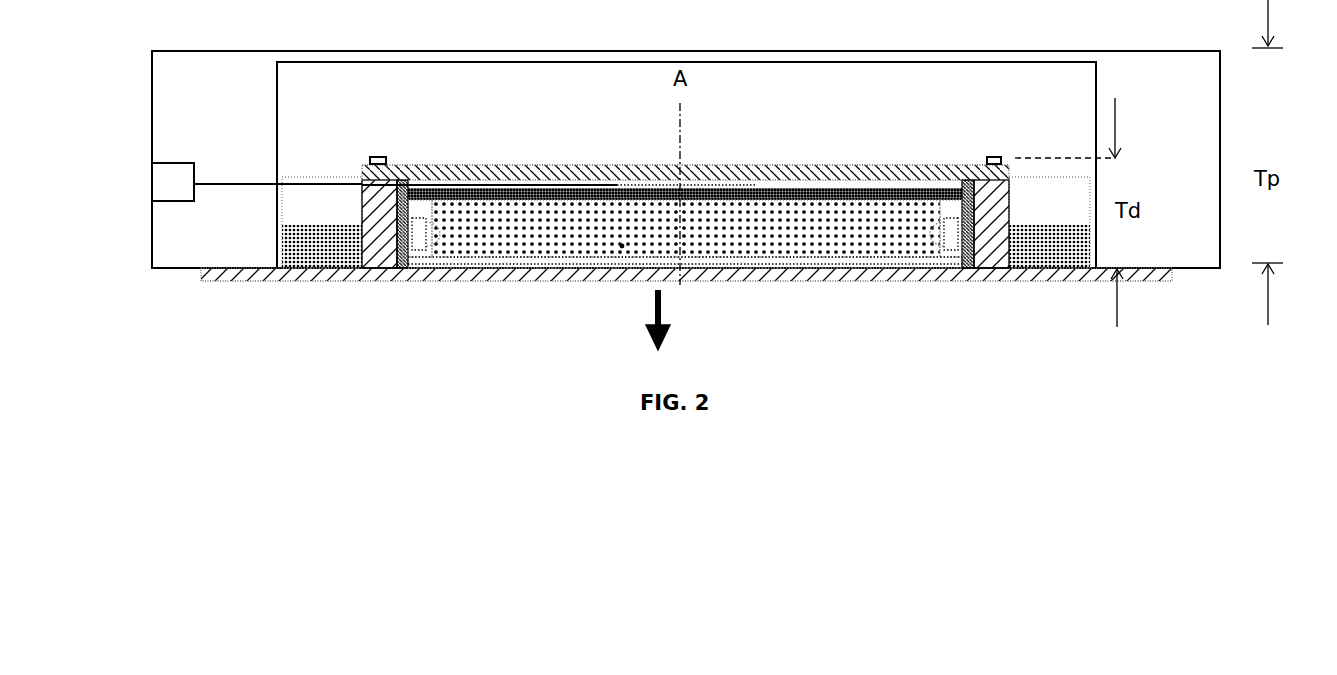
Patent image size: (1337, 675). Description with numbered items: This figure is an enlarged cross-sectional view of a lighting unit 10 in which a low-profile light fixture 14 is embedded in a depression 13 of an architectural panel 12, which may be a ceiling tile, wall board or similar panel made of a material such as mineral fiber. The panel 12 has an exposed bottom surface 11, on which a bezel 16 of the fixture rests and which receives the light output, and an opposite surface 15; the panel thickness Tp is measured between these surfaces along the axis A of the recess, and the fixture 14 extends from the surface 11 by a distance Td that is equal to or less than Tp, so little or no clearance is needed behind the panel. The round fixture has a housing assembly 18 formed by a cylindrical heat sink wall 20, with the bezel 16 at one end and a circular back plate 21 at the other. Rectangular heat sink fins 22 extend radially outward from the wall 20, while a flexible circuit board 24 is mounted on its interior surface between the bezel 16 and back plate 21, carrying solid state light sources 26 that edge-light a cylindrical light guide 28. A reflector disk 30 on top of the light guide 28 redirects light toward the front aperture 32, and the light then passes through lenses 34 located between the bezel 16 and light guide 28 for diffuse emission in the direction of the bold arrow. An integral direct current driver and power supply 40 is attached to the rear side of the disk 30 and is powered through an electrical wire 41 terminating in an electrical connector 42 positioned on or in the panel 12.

The lighting unit 10 is at (890, 373).
The bottom surface 11 is at (172, 270).
The architectural panel 12 is at (196, 89).
The depression 13 is at (275, 95).
The light fixture 14 is at (872, 150).
The bottom surface 15 is at (391, 50).
The bezel 16 is at (320, 285).
The housing assembly 18 is at (375, 200).
The cylindrical wall 20 is at (990, 215).
The circular back plate 21 is at (597, 162).
The heat sink fins 22 is at (312, 194).
The flexible circuit board 24 is at (977, 245).
The solid state light sources 26 is at (405, 282).
The light guide 28 is at (610, 258).
The reflector disk 30 is at (873, 192).
The aperture 32 is at (483, 274).
The lenses 34 is at (850, 270).
The driver and power supply 40 is at (747, 180).
The electrical wire 41 is at (248, 185).
The electrical connector 42 is at (180, 164).